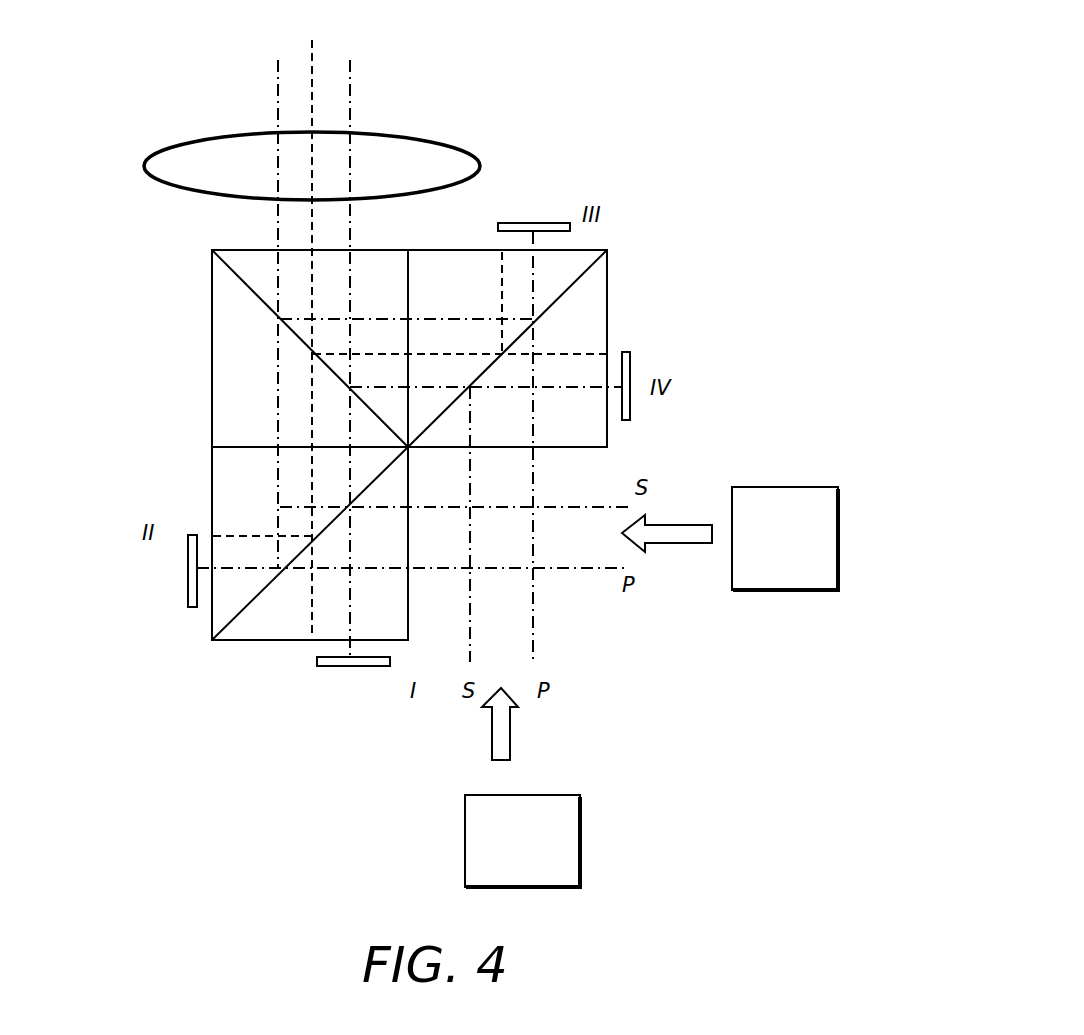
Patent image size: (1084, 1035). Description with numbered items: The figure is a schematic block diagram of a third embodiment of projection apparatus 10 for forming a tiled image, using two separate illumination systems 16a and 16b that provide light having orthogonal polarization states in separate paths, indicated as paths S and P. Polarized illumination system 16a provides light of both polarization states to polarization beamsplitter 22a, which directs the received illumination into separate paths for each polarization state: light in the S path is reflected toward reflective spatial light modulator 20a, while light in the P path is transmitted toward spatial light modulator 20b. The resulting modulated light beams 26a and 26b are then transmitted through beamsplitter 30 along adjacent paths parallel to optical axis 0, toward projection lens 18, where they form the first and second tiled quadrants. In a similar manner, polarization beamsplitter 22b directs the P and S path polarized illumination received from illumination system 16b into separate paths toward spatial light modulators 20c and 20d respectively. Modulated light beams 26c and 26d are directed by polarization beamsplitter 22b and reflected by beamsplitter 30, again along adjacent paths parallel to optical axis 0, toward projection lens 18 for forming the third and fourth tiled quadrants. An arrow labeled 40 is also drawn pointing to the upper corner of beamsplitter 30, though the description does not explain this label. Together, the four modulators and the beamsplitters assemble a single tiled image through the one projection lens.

The optical axis 0 is at (312, 60).
The projection apparatus 10 is at (712, 144).
The illumination system 16a is at (775, 591).
The illumination system 16b is at (465, 840).
The projection lens 18 is at (186, 143).
The reflective spatial light modulator 20a is at (348, 667).
The spatial light modulator 20b is at (188, 590).
The spatial light modulator 20c is at (513, 222).
The spatial light modulator 20d is at (632, 356).
The polarization beamsplitter 22a is at (213, 462).
The polarization beamsplitter 22b is at (607, 270).
The modulated light beam 26a is at (325, 608).
The modulated light beam 26b is at (293, 507).
The modulated light beam 26c is at (525, 275).
The modulated light beam 26d is at (568, 377).
The beamsplitter 30 is at (212, 276).
The reflective coating surface 40 is at (208, 251).